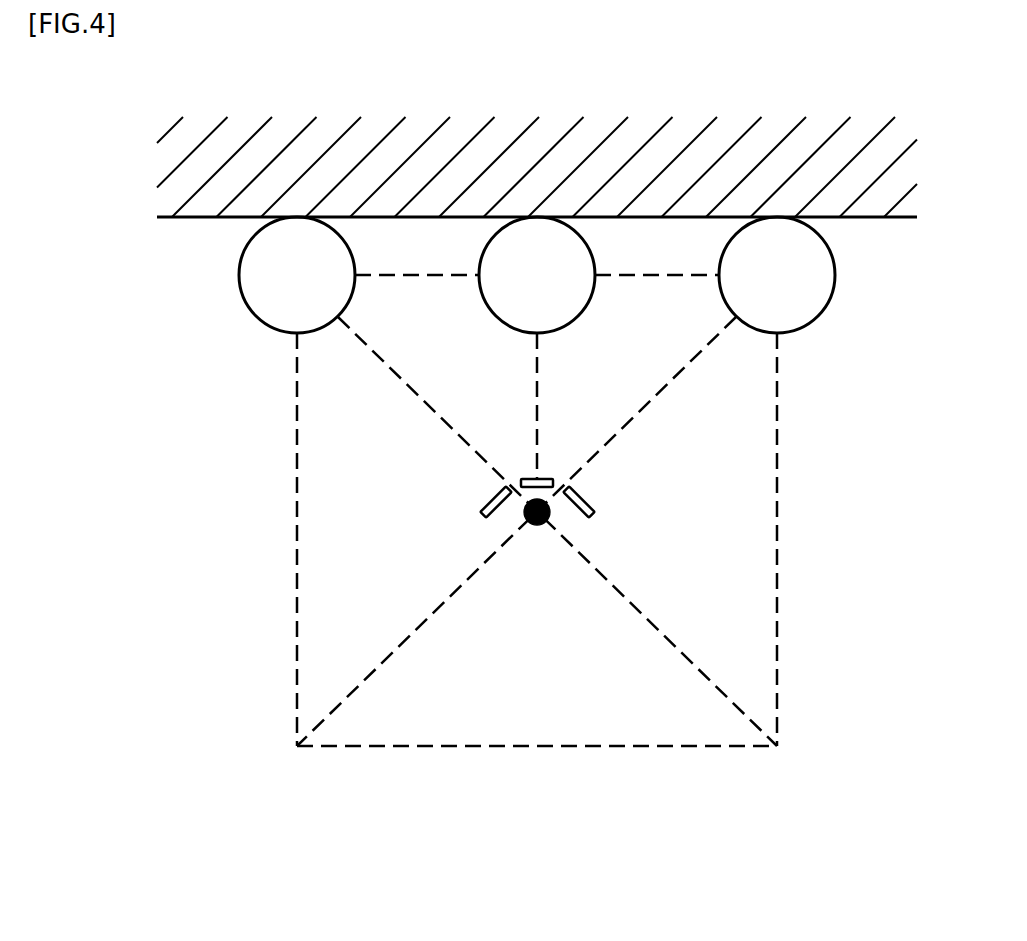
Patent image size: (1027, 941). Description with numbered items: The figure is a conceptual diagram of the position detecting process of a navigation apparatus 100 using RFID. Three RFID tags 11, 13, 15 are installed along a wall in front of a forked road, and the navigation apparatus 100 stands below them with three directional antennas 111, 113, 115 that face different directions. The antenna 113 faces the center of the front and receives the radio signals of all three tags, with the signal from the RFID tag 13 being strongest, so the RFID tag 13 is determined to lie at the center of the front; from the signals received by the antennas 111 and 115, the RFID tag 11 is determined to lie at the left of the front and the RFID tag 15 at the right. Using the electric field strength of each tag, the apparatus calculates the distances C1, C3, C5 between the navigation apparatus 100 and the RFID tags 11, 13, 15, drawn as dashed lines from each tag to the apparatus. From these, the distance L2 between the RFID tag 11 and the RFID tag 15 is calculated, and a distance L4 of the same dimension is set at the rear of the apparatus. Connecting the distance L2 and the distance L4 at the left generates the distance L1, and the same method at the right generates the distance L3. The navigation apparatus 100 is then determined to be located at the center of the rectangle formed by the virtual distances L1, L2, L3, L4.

The RFID tag 11 is at (239, 272).
The RFID tag 13 is at (588, 243).
The RFID tag 15 is at (835, 267).
The navigation apparatus 100 is at (537, 585).
The directional antenna 111 is at (481, 504).
The directional antenna 113 is at (541, 480).
The directional antenna 115 is at (595, 500).
The distance L1 is at (297, 525).
The distance L2 is at (633, 284).
The distance L3 is at (777, 500).
The distance L4 is at (537, 746).
The distance C1 is at (557, 531).
The distance C3 is at (561, 405).
The distance C5 is at (516, 531).